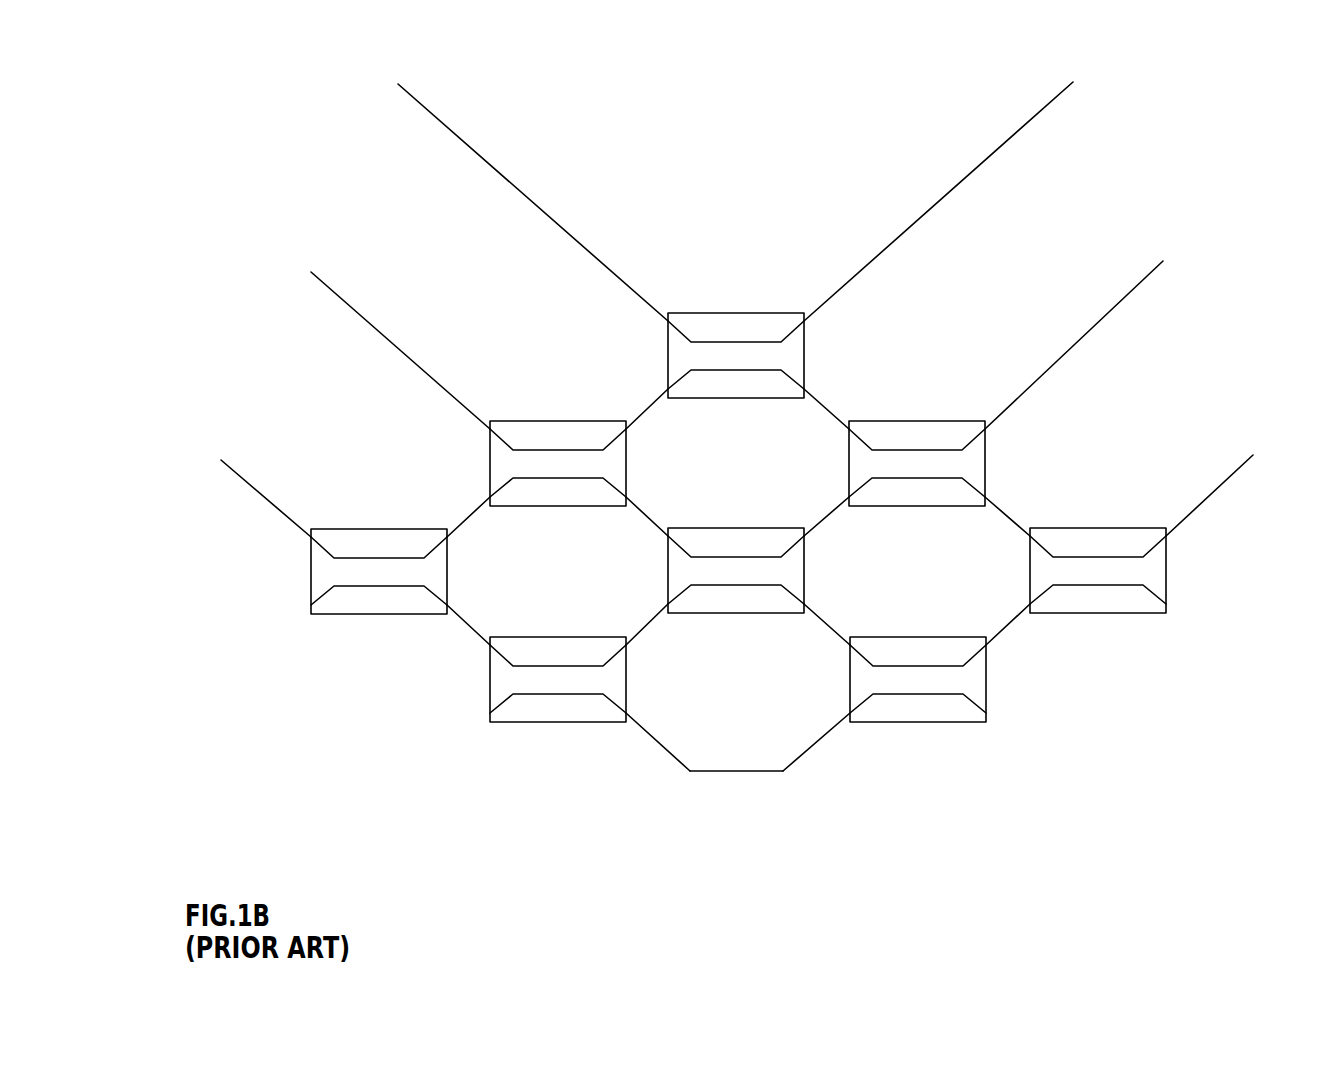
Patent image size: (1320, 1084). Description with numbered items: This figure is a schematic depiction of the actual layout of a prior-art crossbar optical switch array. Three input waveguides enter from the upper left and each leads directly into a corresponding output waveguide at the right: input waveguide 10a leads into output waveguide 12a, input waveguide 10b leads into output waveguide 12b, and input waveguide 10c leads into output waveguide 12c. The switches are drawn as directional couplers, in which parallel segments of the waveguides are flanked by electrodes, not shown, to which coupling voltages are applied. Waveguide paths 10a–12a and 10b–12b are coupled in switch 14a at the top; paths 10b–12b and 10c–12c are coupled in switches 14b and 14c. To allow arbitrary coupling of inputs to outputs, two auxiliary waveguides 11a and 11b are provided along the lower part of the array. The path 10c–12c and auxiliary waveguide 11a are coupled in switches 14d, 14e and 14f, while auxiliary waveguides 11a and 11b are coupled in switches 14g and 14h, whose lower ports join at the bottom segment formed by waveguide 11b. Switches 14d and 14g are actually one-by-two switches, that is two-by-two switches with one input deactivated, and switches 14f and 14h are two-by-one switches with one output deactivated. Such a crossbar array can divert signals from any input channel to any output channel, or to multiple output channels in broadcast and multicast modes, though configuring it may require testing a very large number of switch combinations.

The input waveguide 10a is at (483, 158).
The input waveguide 10b is at (339, 297).
The input waveguide 10c is at (262, 495).
The output waveguide 12a is at (988, 157).
The output waveguide 12b is at (1133, 287).
The output waveguide 12c is at (1222, 487).
The switch 14a is at (733, 313).
The switch 14b is at (552, 421).
The switch 14c is at (912, 421).
The switch 14d is at (370, 529).
The switch 14e is at (733, 528).
The switch 14f is at (1090, 528).
The switch 14g is at (553, 637).
The switch 14h is at (910, 637).
The auxiliary waveguide 11a is at (468, 625).
The auxiliary waveguide 11b is at (737, 771).